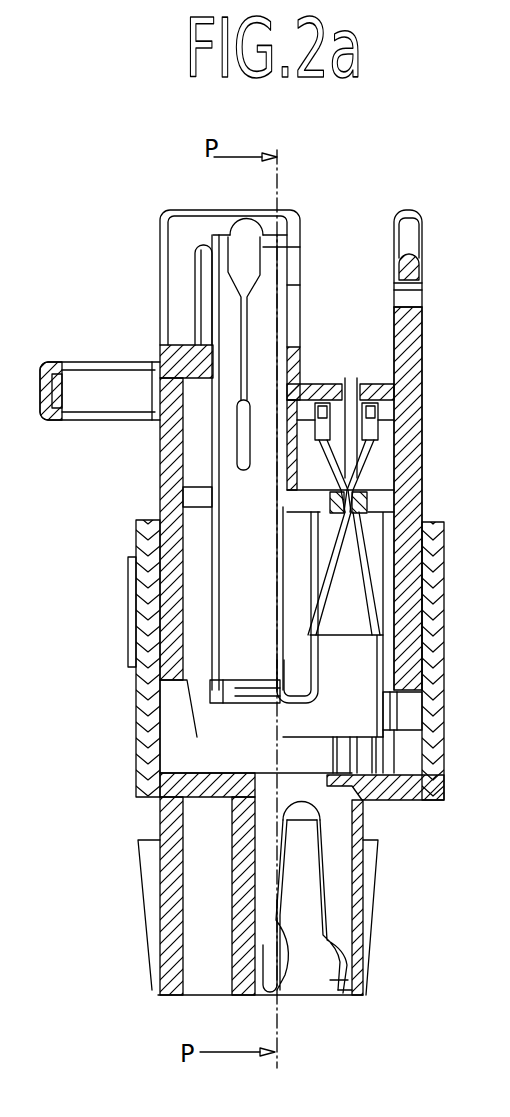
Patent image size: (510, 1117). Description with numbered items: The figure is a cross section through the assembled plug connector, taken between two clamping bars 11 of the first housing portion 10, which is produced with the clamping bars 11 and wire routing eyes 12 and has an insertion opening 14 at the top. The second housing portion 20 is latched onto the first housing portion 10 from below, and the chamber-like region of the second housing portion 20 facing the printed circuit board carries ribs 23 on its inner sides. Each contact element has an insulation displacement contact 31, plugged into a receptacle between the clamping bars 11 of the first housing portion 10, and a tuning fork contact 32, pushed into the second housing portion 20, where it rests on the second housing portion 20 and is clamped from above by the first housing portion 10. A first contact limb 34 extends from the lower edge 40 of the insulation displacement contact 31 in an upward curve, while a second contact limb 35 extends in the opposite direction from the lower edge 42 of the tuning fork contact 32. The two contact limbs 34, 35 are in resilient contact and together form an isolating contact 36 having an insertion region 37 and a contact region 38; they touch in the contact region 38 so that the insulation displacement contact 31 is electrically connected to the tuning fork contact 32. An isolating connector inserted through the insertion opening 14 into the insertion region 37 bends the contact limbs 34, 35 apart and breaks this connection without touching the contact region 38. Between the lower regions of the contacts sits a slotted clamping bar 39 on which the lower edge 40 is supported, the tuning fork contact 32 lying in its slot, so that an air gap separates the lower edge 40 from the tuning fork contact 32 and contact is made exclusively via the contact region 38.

The first housing portion 10 is at (413, 346).
The clamping bars 11 is at (200, 212).
The wire routing eyes 12 is at (70, 362).
The insertion opening 14 is at (351, 397).
The second housing portion 20 is at (160, 812).
The ribs 23 is at (345, 992).
The insulation displacement contact 31 is at (233, 357).
The tuning fork contact 32 is at (327, 953).
The first contact limb 34 is at (330, 560).
The second contact limb 35 is at (373, 603).
The isolating contact 36 is at (370, 463).
The insertion region 37 is at (342, 396).
The contact region 38 is at (398, 508).
The slotted clamping bar 39 is at (280, 717).
The lower edge of the insulation displacement contact 40 is at (287, 692).
The lower edge of the tuning fork contact 42 is at (278, 736).